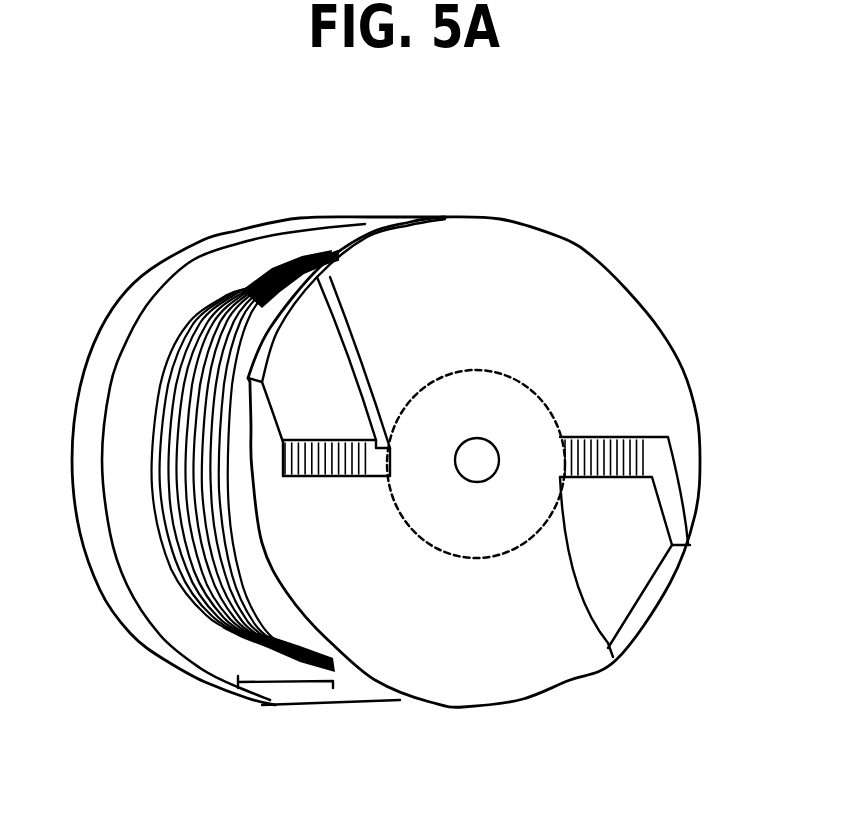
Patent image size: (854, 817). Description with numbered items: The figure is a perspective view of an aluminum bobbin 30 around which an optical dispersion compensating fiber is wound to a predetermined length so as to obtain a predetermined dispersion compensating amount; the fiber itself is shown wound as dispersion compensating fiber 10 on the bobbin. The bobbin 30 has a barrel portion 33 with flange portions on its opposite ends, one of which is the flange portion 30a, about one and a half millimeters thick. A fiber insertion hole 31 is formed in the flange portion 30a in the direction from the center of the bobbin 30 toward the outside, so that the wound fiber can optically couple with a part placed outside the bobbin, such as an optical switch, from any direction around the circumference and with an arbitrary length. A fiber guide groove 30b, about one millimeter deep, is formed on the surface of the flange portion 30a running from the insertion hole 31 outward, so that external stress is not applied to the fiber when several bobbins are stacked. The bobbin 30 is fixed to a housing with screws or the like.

The cylindrical body with helical groove 10 is at (285, 683).
The bobbin 30 is at (564, 220).
The flange portion 30a is at (475, 233).
The fiber guide groove 30b is at (632, 587).
The fiber insertion hole 31 is at (668, 450).
The barrel portion 33 is at (530, 388).